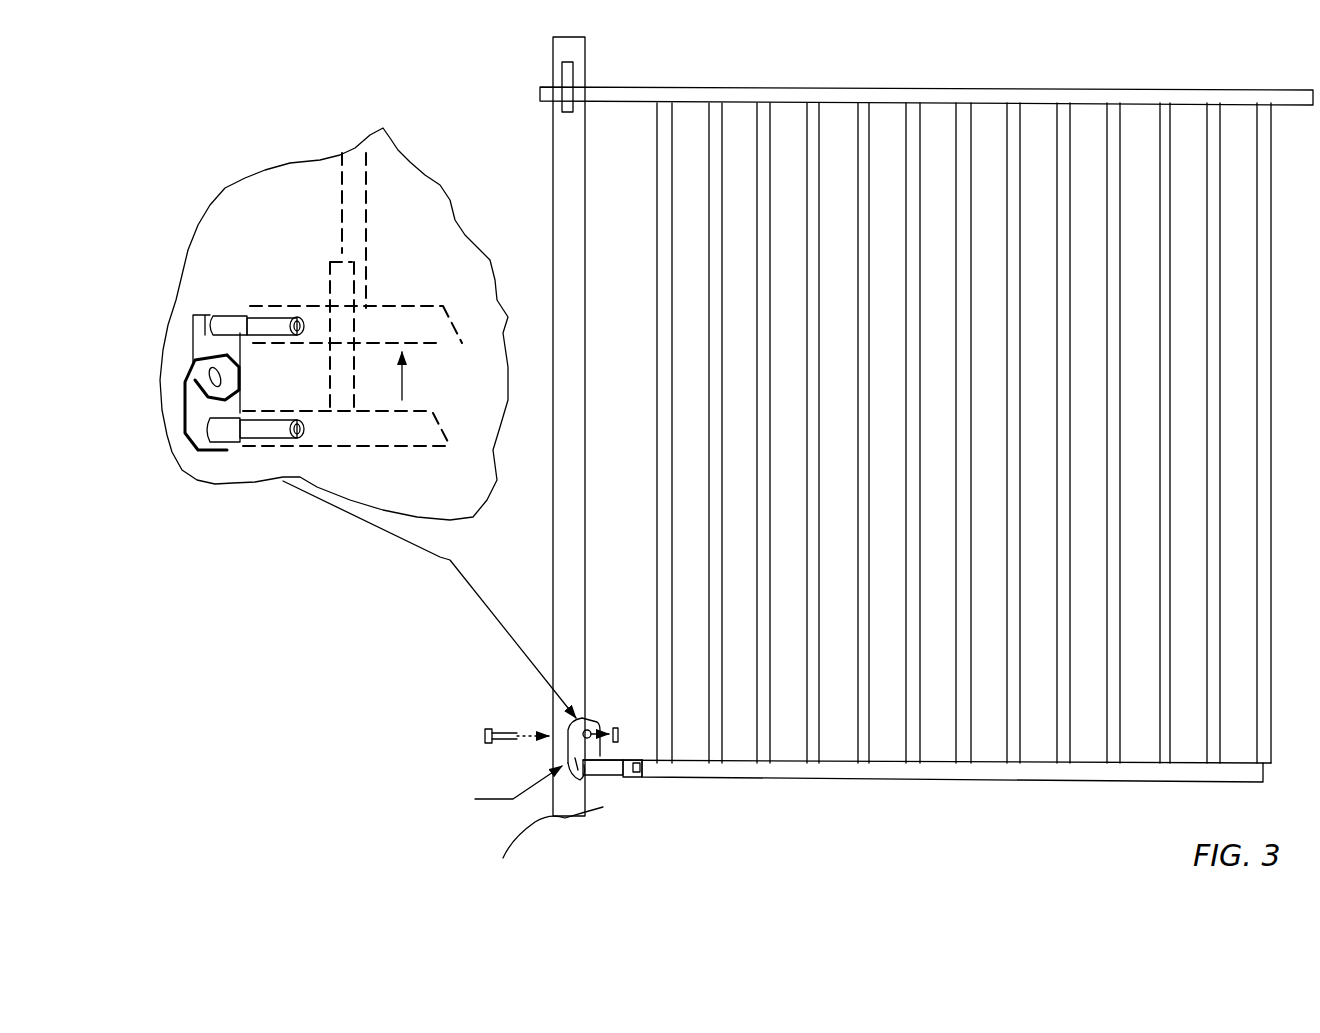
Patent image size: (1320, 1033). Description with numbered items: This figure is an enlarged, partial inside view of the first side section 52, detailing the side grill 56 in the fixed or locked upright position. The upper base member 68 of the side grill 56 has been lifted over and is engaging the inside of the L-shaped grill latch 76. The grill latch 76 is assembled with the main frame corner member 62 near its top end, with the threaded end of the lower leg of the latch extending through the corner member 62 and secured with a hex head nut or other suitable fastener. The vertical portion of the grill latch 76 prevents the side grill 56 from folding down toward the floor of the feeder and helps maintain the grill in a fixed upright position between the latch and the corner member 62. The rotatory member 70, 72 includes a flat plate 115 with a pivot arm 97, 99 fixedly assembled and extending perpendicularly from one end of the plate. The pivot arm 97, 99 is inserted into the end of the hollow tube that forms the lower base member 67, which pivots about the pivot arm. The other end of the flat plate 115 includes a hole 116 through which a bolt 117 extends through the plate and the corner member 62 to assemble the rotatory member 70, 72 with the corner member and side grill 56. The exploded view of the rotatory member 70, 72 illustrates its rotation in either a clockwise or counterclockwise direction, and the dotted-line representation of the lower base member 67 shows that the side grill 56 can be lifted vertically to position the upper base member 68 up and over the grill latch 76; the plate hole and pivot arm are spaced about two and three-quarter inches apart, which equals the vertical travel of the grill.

The first side section 52 is at (975, 65).
The side grill 56 is at (1090, 78).
The main frame corner member 62 is at (563, 168).
The lower base member 67 is at (832, 768).
The upper base member 68 is at (767, 88).
The rotatory member 70 is at (200, 476).
The hinge bolt 72 is at (243, 583).
The L-shaped grill latch 76 is at (563, 73).
The pivot arm 97 is at (470, 553).
The rail tube end 99 is at (232, 321).
The flat plate 115 is at (207, 300).
The hole 116 is at (590, 732).
The bolt 117 is at (505, 742).